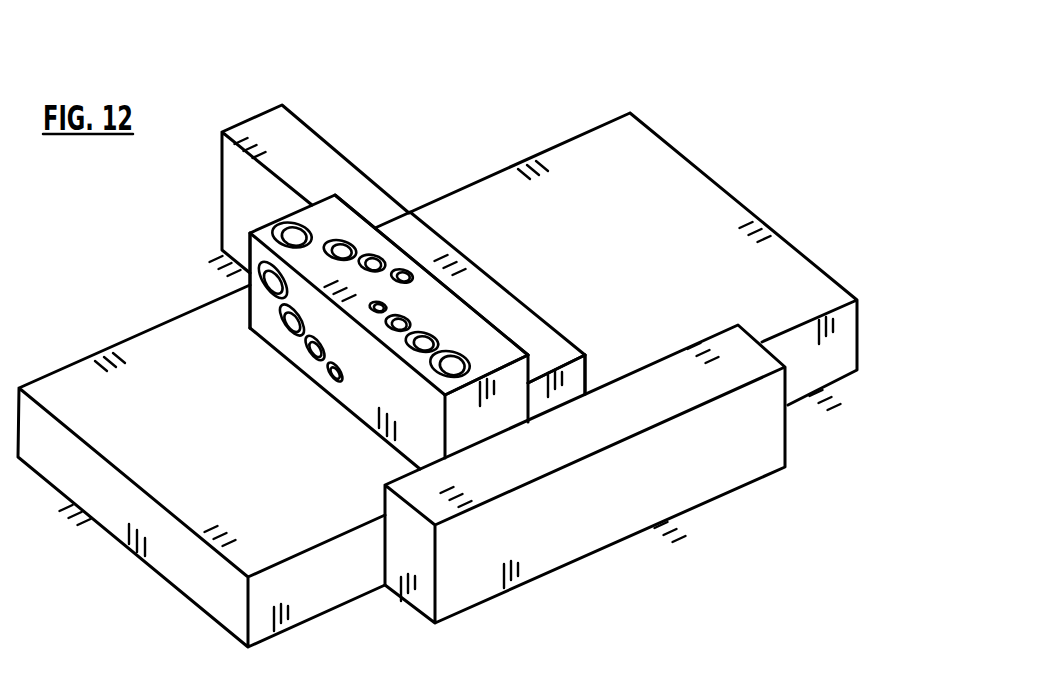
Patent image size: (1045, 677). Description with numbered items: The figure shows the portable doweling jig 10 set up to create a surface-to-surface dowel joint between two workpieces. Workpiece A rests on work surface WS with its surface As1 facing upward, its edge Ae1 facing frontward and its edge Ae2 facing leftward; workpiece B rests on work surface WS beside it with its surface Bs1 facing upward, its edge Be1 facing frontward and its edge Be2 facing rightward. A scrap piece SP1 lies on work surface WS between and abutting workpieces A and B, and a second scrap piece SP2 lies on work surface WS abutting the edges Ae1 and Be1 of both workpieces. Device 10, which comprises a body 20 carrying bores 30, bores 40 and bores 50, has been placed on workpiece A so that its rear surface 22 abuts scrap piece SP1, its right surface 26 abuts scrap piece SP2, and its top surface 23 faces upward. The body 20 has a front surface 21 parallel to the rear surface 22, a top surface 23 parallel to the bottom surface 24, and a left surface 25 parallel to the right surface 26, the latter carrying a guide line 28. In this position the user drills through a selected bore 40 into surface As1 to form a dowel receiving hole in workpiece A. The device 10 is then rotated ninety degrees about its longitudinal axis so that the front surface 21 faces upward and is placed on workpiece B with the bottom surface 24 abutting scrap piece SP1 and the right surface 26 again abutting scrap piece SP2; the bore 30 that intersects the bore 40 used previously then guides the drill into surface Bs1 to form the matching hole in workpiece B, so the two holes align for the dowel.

The portable doweling jig 10 is at (543, 93).
The body 20 is at (469, 143).
The front surface 21 is at (387, 462).
The rear surface 22 is at (538, 365).
The top surface 23 is at (505, 350).
The bottom surface 24 is at (345, 416).
The left surface 25 is at (244, 245).
The right surface 26 is at (520, 404).
The guide line 28 is at (474, 438).
The bores 30 is at (323, 374).
The bores 40 is at (403, 268).
The bores 50 is at (460, 355).
The workpiece A is at (233, 482).
The workpiece B is at (656, 262).
The surface As1 is at (163, 338).
The edge Ae1 is at (335, 592).
The edge Ae2 is at (195, 573).
The surface Bs1 is at (643, 168).
The edge Be1 is at (845, 356).
The edge Be2 is at (868, 316).
The scrap piece SP1 is at (332, 179).
The scrap piece SP2 is at (616, 517).
The work surface WS is at (205, 286).